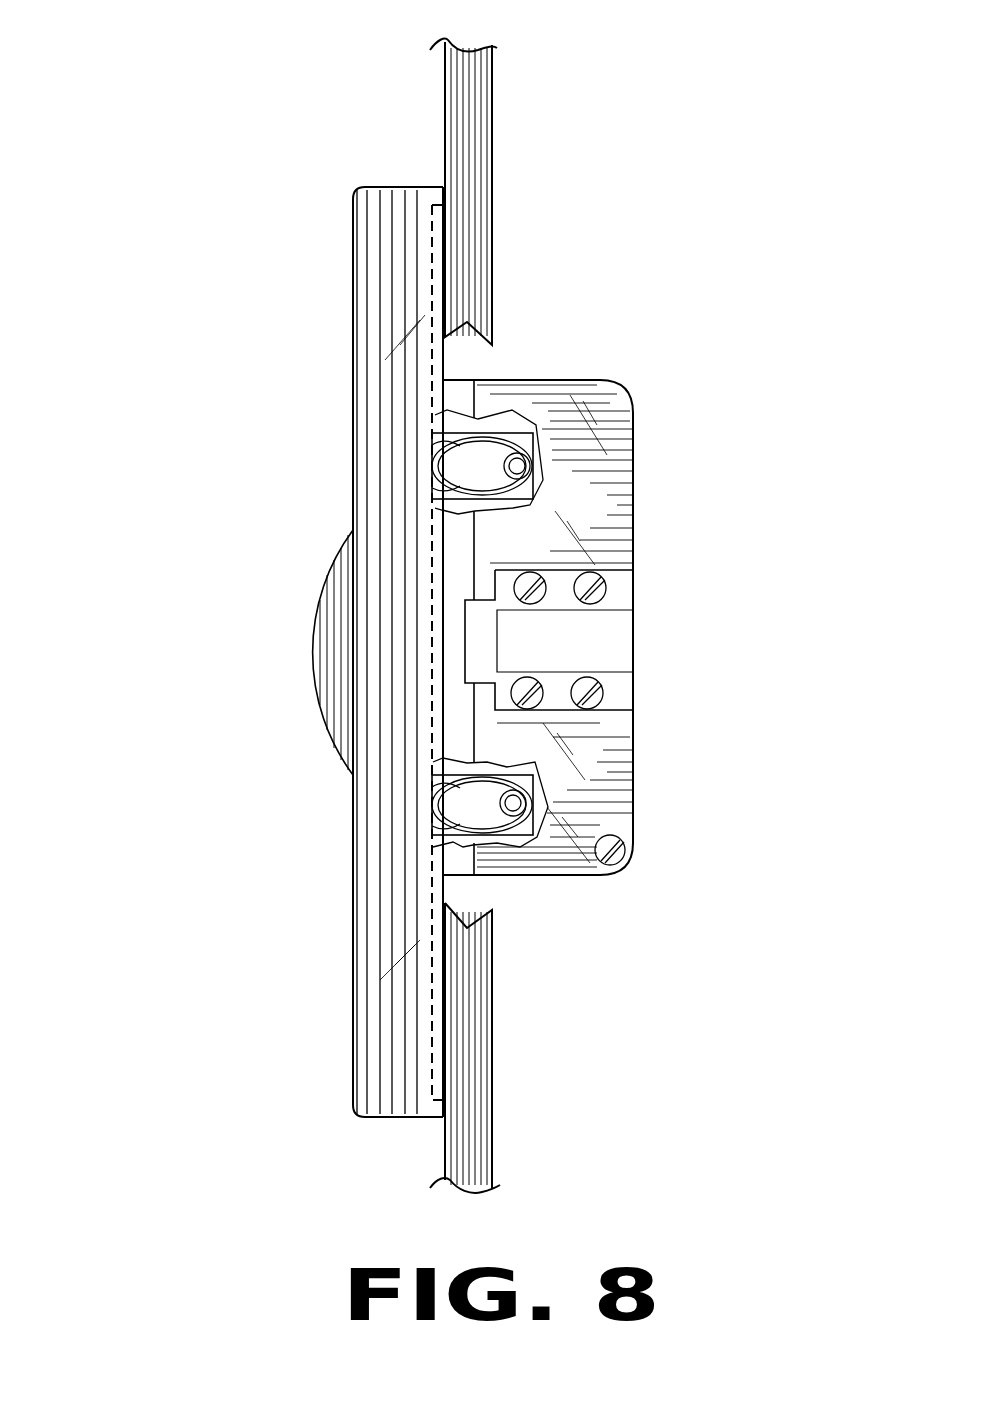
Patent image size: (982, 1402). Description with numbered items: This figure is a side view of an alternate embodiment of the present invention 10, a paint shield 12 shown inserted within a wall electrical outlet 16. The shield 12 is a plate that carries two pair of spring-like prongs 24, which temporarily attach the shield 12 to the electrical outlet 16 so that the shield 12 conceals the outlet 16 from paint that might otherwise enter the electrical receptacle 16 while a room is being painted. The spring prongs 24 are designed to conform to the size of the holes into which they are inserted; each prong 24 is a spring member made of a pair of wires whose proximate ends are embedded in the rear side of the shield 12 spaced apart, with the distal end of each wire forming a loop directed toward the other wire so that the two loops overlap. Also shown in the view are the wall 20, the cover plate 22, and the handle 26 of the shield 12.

The present invention 10 is at (353, 855).
The paint shield 12 is at (353, 477).
The wall electrical outlet 16 is at (635, 428).
The wall 20 is at (444, 128).
The cover plate 22 is at (443, 252).
The spring-like prongs 24 is at (522, 800).
The handle 26 is at (313, 637).